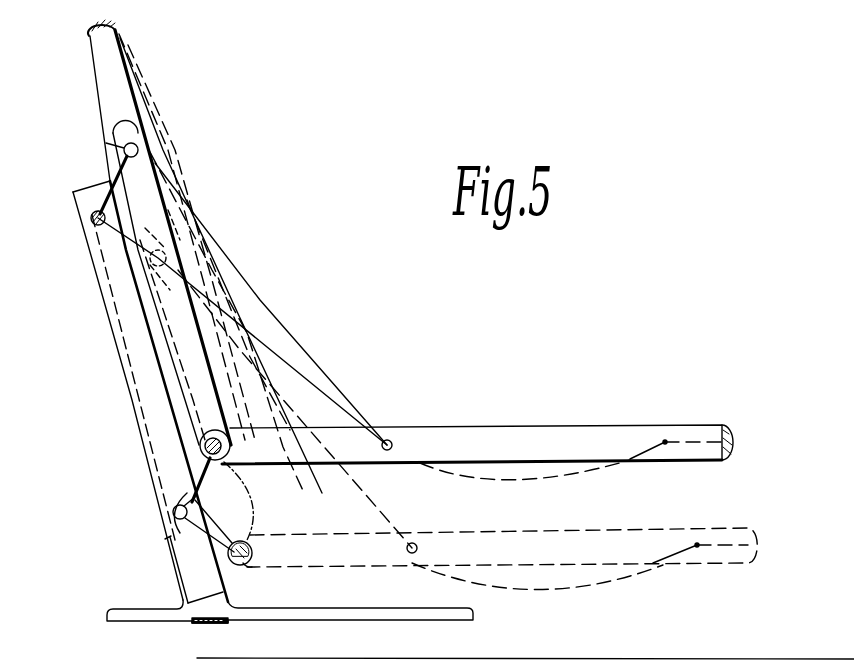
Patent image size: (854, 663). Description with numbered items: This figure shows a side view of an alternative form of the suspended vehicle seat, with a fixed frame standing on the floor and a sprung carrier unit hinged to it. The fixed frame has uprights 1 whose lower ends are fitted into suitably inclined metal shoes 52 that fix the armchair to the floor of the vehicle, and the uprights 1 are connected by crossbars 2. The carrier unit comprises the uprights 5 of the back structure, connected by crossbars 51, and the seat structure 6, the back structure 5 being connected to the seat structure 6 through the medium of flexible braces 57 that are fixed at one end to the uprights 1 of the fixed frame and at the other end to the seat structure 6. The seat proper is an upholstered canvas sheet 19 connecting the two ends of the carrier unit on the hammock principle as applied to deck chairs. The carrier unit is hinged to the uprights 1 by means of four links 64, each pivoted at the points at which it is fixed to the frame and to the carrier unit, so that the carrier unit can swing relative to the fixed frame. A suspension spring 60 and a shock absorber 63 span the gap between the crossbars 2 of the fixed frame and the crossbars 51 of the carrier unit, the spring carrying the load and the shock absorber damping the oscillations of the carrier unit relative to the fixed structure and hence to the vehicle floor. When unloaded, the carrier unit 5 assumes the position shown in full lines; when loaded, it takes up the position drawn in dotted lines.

The uprights of the fixed frame 1 is at (168, 472).
The crossbar 2 is at (93, 221).
The uprights of the carrier unit 5 is at (118, 82).
The seat structure 6 is at (476, 440).
The upholstered canvas sheet 19 is at (382, 441).
The crossbar 51 is at (221, 437).
The metal shoes 52 is at (292, 612).
The flexible braces 57 is at (312, 353).
The suspension spring 60 is at (147, 337).
The shock absorber 63 is at (137, 491).
The links 64 is at (118, 172).